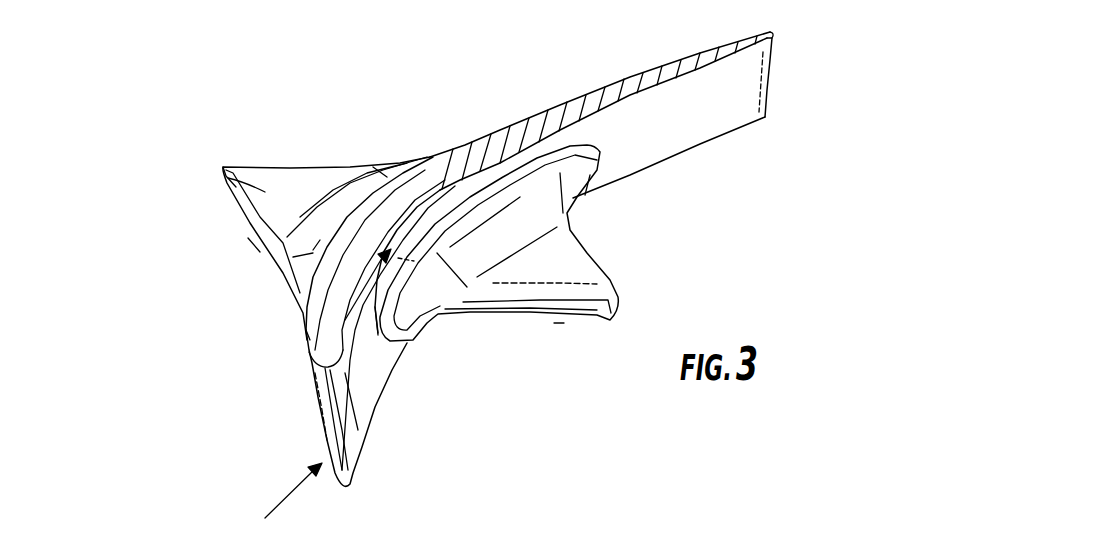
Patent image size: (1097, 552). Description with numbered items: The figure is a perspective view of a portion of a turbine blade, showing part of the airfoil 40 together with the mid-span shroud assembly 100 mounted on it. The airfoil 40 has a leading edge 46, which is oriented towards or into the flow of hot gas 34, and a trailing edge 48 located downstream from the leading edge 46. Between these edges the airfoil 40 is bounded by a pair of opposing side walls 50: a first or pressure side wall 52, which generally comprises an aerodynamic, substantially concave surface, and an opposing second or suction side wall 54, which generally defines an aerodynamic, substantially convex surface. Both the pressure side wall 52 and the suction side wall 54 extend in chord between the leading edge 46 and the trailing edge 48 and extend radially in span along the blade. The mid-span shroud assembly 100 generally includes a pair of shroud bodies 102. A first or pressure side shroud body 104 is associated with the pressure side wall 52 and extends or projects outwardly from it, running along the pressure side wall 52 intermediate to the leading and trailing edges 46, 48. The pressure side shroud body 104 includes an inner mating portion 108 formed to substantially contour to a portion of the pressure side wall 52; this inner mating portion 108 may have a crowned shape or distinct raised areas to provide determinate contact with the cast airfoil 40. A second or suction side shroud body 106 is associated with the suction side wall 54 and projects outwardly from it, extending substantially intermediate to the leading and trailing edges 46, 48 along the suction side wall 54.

The hot gas 34 is at (290, 497).
The airfoil 40 is at (608, 83).
The leading edge 46 is at (323, 430).
The trailing edge 48 is at (772, 60).
The opposing side walls 50 is at (303, 336).
The pressure side wall 52 is at (640, 153).
The suction side wall 54 is at (472, 133).
The mid-span shroud assembly 100 is at (303, 136).
The shroud bodies 102 is at (254, 244).
The pressure side shroud body 104 is at (570, 257).
The suction side shroud body 106 is at (226, 186).
The inner mating portion 108 is at (379, 334).